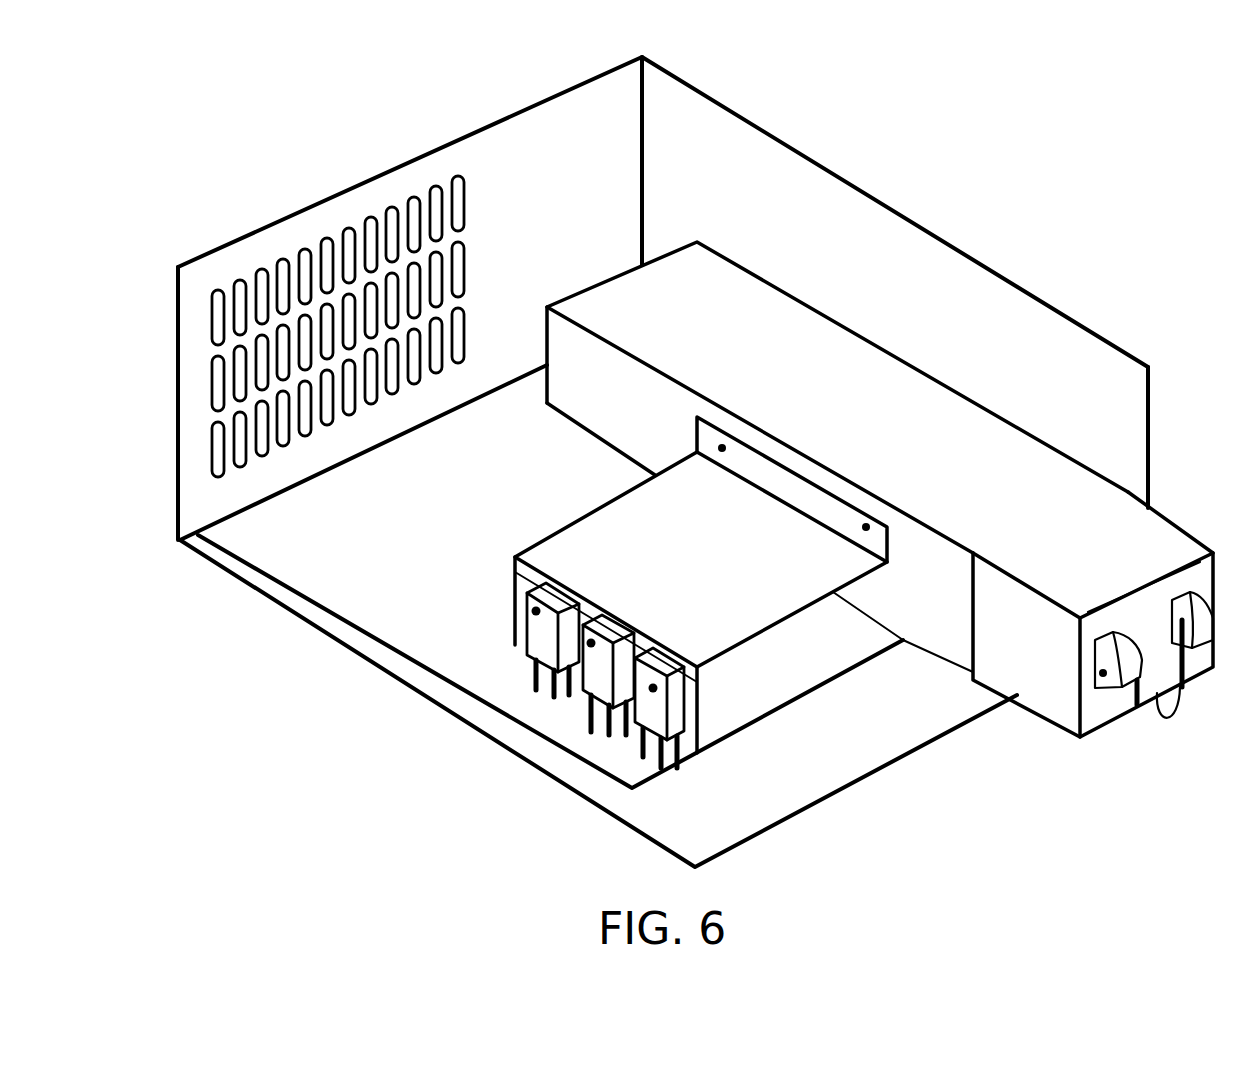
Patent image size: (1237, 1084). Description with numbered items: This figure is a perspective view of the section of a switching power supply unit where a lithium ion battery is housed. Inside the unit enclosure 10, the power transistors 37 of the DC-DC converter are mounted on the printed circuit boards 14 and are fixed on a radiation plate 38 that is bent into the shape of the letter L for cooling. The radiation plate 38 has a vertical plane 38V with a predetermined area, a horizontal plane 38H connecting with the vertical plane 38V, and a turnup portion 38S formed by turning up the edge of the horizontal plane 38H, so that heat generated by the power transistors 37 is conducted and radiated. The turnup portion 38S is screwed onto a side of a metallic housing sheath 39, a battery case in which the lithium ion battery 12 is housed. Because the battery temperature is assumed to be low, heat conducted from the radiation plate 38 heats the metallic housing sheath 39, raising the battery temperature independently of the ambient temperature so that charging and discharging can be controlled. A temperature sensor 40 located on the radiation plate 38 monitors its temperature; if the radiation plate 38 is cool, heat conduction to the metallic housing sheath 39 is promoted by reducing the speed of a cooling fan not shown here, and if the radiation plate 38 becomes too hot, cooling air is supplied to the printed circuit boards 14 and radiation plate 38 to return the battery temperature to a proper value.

The unit enclosure 10 is at (905, 250).
The lithium ion battery 12 is at (1173, 545).
The printed circuit board 14 is at (238, 544).
The power transistor 37 is at (558, 681).
The radiation plate 38 is at (760, 659).
The horizontal plane 38H is at (710, 633).
The vertical plane 38V is at (690, 705).
The turnup portion 38S is at (888, 556).
The metallic housing sheath 39 is at (986, 414).
The temperature sensor 40 is at (533, 632).